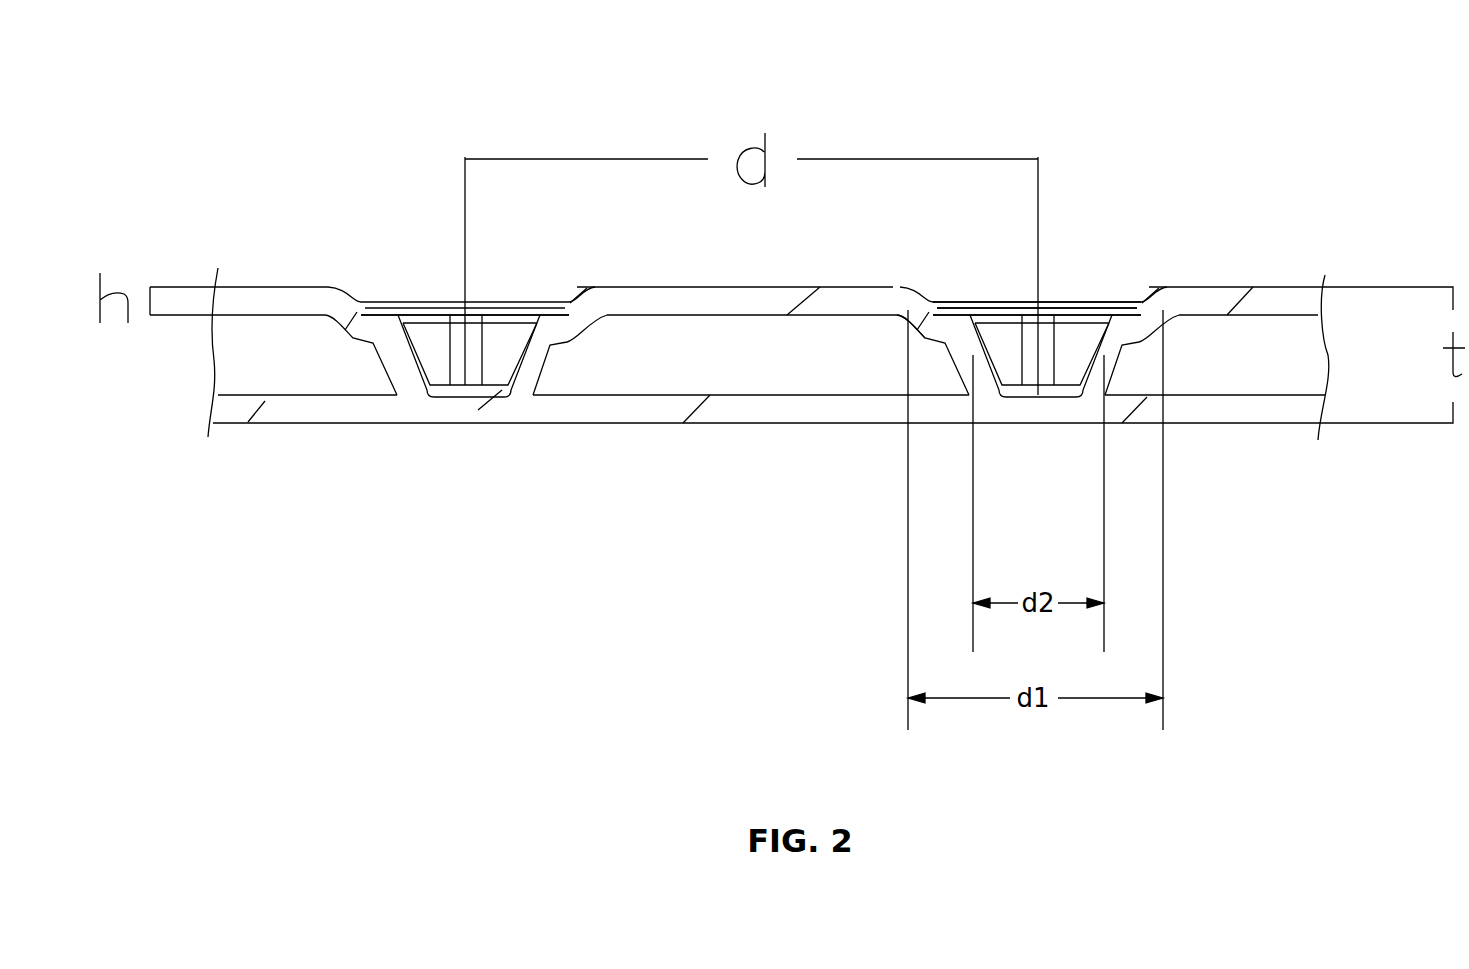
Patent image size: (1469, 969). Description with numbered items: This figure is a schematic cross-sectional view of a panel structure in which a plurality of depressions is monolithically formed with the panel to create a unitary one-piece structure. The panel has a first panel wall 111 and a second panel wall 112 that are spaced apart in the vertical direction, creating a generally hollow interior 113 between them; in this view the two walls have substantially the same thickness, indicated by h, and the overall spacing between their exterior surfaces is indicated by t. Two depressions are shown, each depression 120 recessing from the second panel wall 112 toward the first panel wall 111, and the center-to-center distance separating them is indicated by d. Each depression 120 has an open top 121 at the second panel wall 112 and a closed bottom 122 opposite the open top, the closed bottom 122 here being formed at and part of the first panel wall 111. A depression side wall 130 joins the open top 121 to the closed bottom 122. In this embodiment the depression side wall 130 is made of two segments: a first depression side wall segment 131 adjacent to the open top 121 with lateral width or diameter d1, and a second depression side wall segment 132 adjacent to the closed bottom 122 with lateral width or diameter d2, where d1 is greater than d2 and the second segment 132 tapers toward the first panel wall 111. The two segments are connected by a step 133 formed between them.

The first panel wall 111 is at (337, 410).
The second panel wall 112 is at (281, 303).
The generally hollow interior 113 is at (275, 358).
The depression 120 is at (832, 339).
The open top 121 is at (1057, 288).
The closed bottom 122 is at (1028, 397).
The depression side wall 130 is at (1107, 358).
The first depression side wall segment 131 is at (908, 310).
The second depression side wall segment 132 is at (972, 358).
The step 133 is at (940, 325).